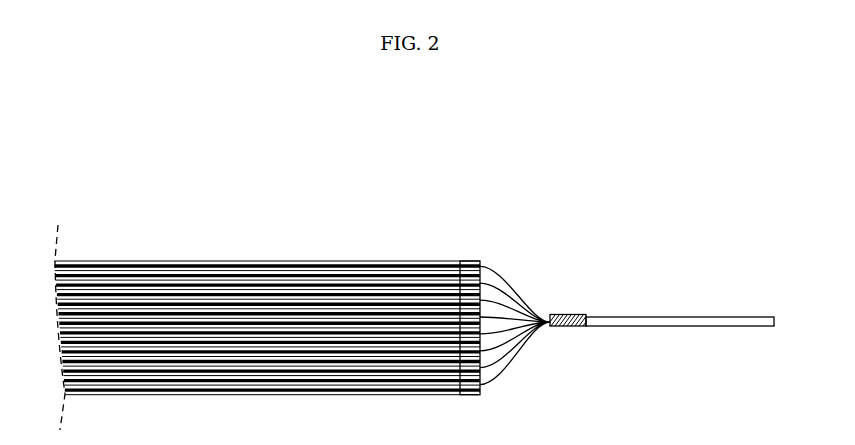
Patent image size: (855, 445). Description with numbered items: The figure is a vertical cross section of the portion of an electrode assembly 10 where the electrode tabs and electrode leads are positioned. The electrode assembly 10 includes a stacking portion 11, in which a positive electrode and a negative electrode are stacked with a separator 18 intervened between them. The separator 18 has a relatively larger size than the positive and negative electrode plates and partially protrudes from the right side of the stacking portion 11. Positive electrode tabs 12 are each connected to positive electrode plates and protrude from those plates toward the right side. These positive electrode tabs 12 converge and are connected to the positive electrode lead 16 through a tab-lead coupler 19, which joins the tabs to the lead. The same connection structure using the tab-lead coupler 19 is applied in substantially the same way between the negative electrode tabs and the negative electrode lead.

The electrode assembly 10 is at (68, 118).
The stacking portion 11 is at (199, 244).
The positive electrode tabs 12 is at (522, 283).
The positive electrode lead 16 is at (737, 317).
The separator 18 is at (473, 262).
The tab-lead coupler 19 is at (575, 315).